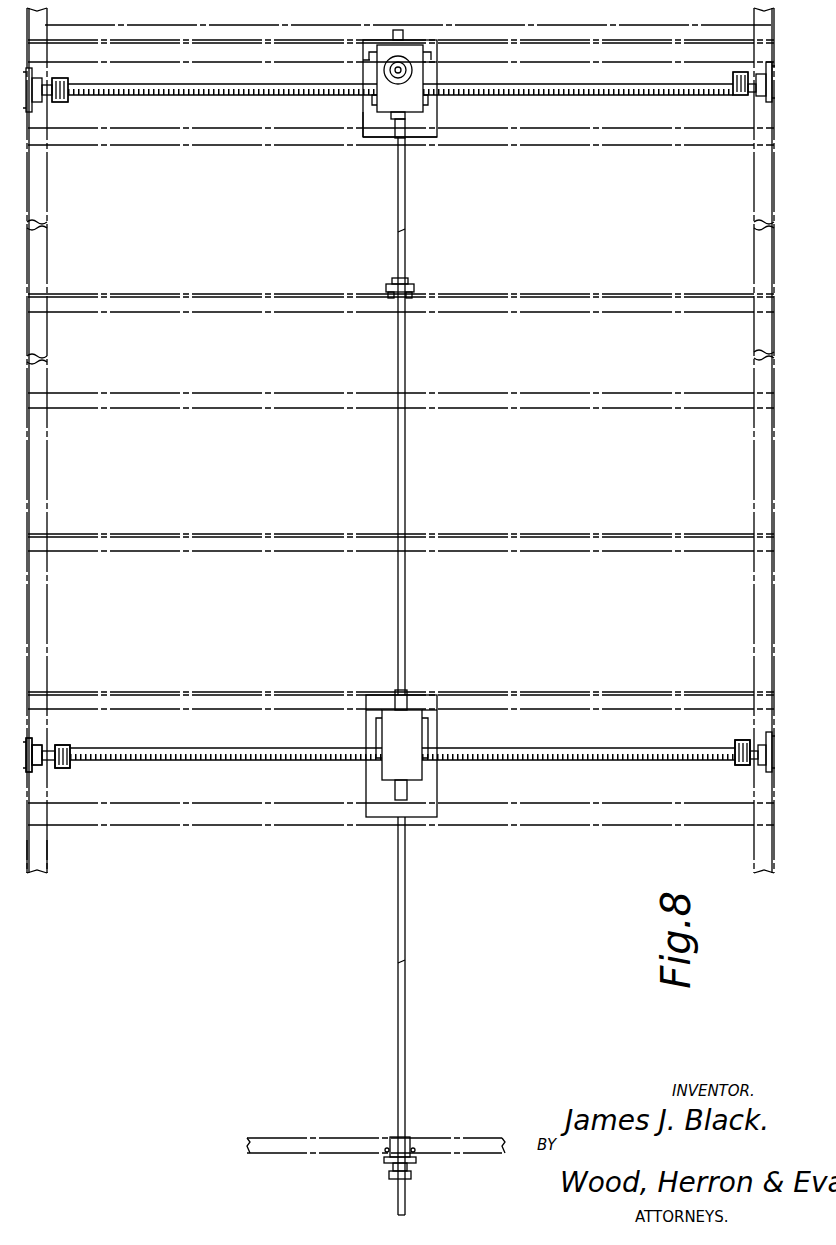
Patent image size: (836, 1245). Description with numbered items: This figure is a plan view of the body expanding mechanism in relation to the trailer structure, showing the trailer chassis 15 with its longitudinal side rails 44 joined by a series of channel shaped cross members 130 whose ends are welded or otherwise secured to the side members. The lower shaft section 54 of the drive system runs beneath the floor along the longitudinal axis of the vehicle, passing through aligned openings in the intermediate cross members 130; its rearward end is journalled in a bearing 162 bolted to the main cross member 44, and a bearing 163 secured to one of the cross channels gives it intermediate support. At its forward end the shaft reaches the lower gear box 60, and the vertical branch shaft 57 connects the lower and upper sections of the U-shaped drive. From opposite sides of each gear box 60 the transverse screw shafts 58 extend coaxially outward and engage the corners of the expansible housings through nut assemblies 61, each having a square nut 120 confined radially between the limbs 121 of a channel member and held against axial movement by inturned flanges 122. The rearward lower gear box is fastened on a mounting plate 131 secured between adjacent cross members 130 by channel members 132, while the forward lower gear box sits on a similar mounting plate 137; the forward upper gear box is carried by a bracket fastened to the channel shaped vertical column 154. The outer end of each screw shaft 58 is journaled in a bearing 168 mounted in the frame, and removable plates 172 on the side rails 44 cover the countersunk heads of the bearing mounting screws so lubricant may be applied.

The trailer chassis 15 is at (52, 868).
The side rail 44 is at (46, 447).
The lower shaft section 54 is at (398, 452).
The vertical branch shaft 57 is at (385, 67).
The screw shaft 58 is at (188, 94).
The gear box 60 is at (418, 118).
The nut assembly 61 is at (70, 97).
The nut 120 is at (68, 744).
The limb 121 is at (58, 100).
The flange 122 is at (732, 96).
The cross member 130 is at (609, 292).
The mounting plate 131 is at (366, 728).
The channel member 132 is at (443, 724).
The mounting plate 137 is at (377, 138).
The vertical column 154 is at (440, 50).
The bearing 162 is at (388, 1138).
The bearing 163 is at (386, 281).
The bearing 168 is at (24, 89).
The removable plate 172 is at (28, 742).